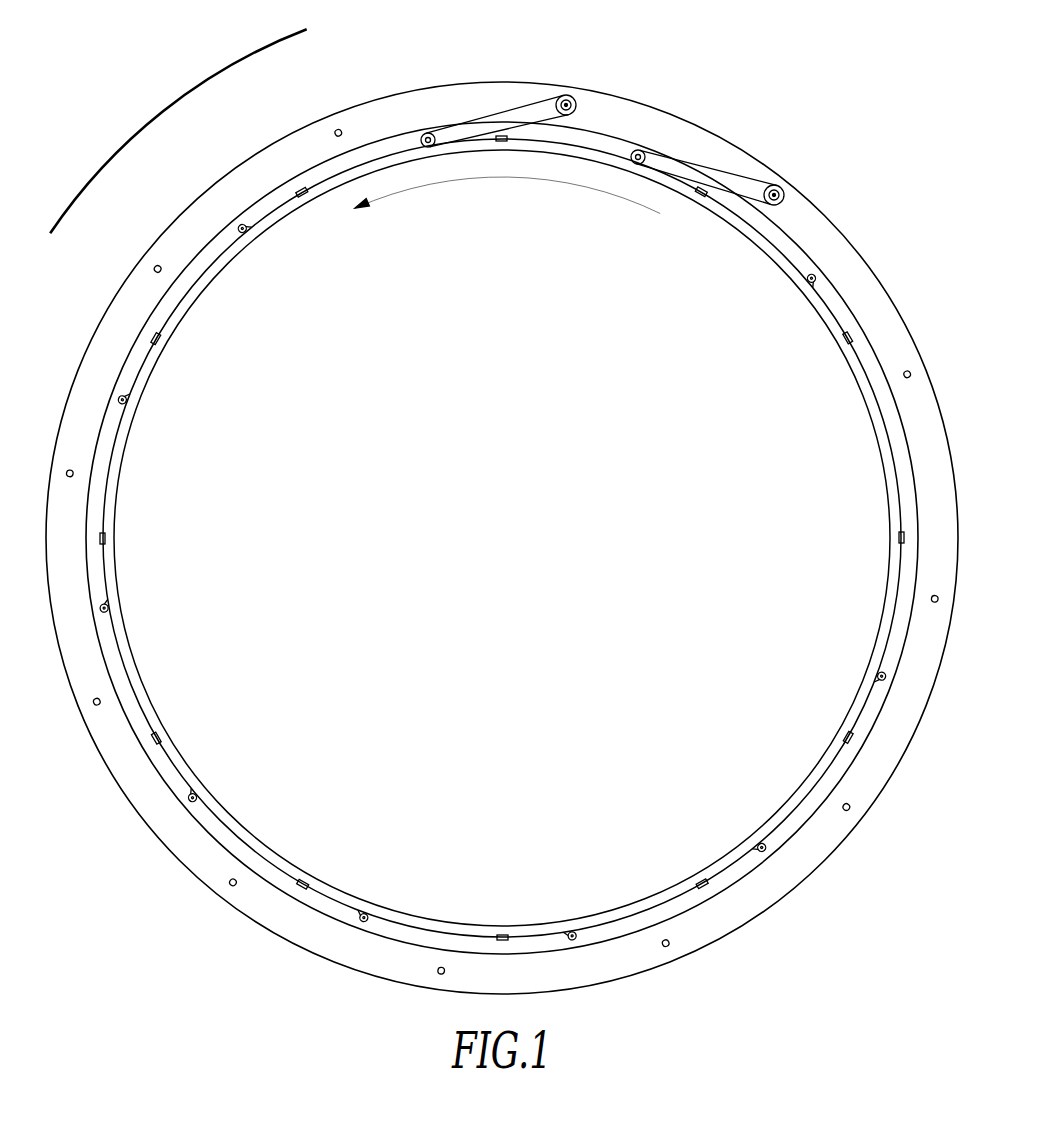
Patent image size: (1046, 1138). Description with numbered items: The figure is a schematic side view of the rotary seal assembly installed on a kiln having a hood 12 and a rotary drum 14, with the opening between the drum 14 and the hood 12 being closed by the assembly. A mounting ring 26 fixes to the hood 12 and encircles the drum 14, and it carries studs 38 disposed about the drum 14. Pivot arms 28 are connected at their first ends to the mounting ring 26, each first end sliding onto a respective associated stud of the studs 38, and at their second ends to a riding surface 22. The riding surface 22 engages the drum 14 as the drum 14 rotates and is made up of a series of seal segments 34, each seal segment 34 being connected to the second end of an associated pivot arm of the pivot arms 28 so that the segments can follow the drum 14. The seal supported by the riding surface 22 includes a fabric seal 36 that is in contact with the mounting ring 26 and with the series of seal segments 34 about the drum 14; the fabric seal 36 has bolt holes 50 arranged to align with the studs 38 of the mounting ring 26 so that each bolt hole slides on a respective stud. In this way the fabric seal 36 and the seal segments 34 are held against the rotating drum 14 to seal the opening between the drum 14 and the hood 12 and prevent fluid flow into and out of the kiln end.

The hood 12 is at (238, 154).
The rotary drum 14 is at (483, 178).
The riding surface 22 is at (614, 146).
The mounting ring 26 is at (483, 95).
The pivot arms 28 is at (727, 176).
The seal segments 34 is at (284, 204).
The fabric seal 36 is at (752, 213).
The studs 38 is at (584, 92).
The bolt holes 50 is at (80, 472).